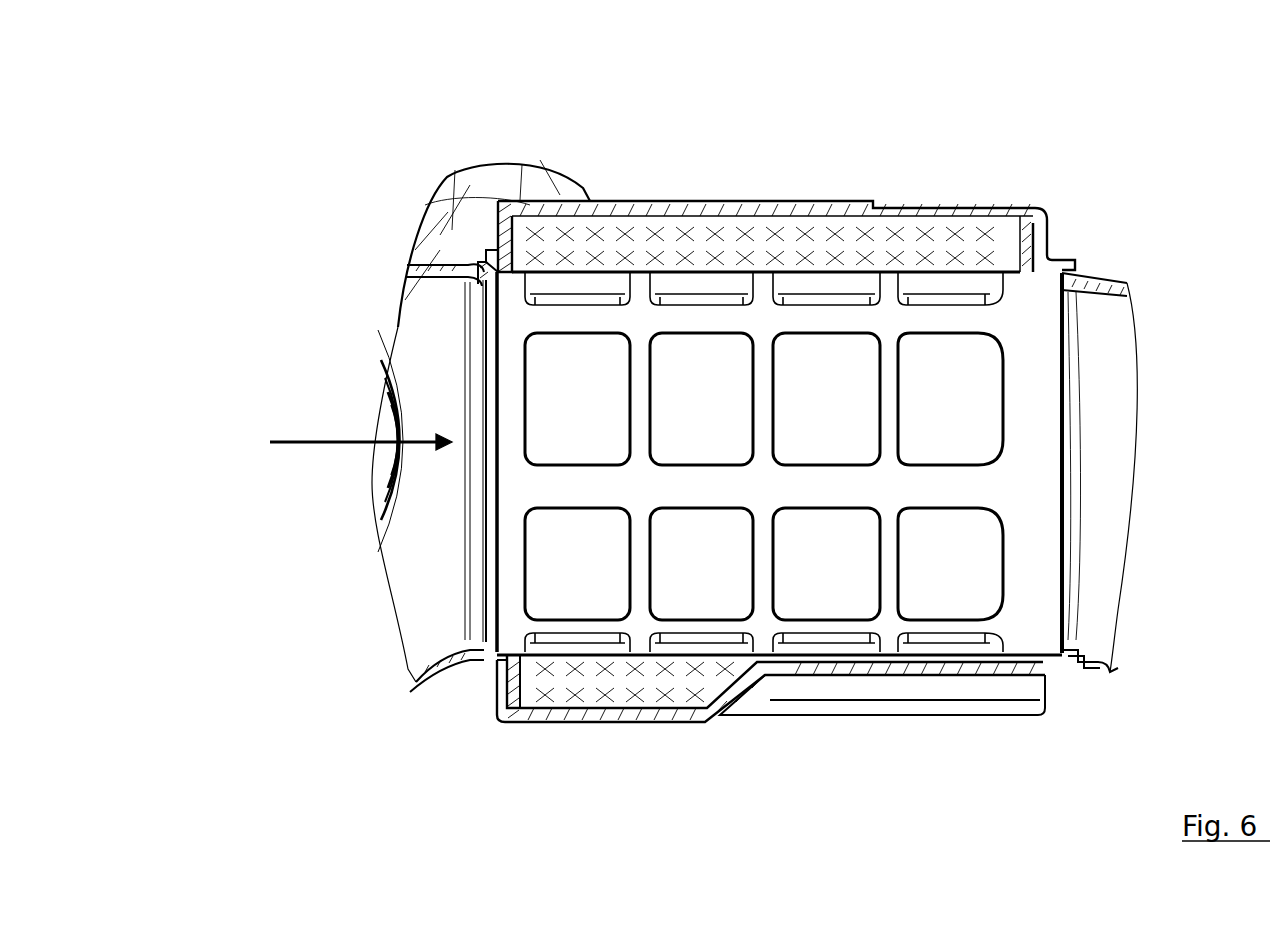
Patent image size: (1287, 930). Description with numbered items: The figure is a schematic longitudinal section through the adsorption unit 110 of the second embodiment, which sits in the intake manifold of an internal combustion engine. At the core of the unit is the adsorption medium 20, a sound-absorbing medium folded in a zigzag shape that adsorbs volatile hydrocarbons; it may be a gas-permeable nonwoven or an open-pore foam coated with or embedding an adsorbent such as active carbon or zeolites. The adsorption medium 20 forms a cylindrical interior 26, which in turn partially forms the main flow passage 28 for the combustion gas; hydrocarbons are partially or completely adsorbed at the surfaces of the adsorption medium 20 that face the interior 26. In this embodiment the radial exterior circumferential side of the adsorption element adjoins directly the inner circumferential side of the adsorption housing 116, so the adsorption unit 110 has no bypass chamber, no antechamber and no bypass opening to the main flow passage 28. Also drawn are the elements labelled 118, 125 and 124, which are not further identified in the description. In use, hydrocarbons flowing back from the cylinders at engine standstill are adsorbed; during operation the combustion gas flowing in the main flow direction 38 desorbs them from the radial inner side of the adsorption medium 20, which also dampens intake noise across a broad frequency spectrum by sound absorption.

The adsorption unit 110 is at (215, 128).
The adsorption housing 116 is at (757, 196).
The sealing foam 118 is at (913, 238).
The adsorption medium 20 is at (672, 236).
The main flow passage 28 is at (733, 421).
The opening 125 is at (952, 398).
The interior 26 is at (945, 446).
The side wall 124 is at (1034, 517).
The main flow direction 38 is at (278, 446).